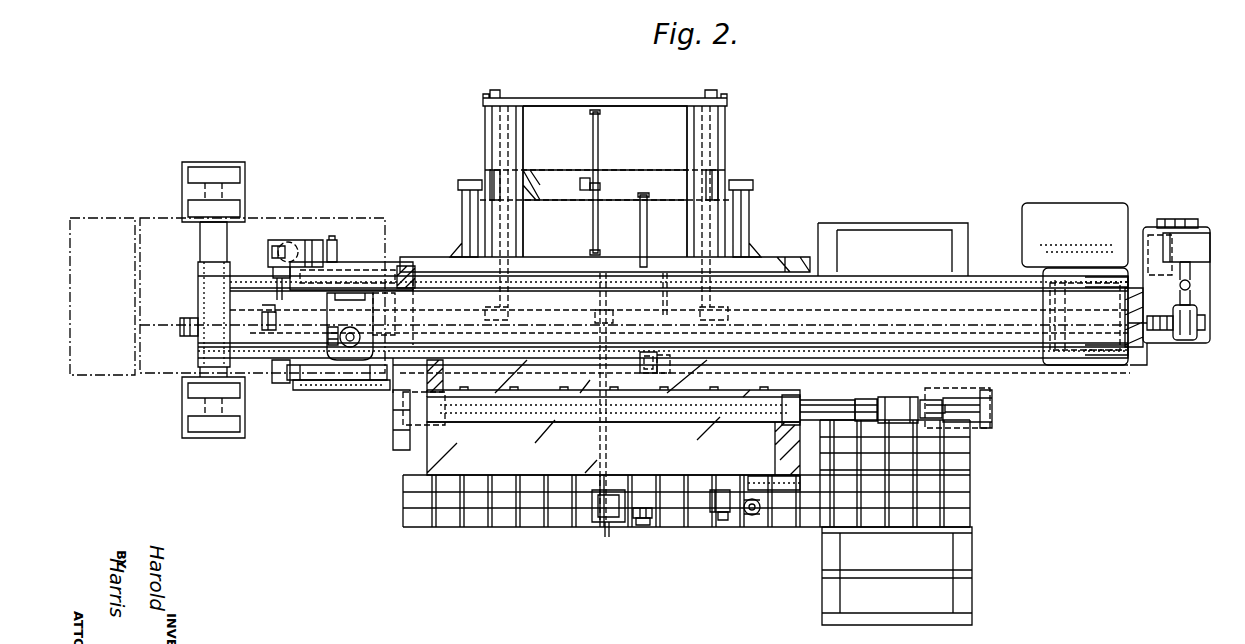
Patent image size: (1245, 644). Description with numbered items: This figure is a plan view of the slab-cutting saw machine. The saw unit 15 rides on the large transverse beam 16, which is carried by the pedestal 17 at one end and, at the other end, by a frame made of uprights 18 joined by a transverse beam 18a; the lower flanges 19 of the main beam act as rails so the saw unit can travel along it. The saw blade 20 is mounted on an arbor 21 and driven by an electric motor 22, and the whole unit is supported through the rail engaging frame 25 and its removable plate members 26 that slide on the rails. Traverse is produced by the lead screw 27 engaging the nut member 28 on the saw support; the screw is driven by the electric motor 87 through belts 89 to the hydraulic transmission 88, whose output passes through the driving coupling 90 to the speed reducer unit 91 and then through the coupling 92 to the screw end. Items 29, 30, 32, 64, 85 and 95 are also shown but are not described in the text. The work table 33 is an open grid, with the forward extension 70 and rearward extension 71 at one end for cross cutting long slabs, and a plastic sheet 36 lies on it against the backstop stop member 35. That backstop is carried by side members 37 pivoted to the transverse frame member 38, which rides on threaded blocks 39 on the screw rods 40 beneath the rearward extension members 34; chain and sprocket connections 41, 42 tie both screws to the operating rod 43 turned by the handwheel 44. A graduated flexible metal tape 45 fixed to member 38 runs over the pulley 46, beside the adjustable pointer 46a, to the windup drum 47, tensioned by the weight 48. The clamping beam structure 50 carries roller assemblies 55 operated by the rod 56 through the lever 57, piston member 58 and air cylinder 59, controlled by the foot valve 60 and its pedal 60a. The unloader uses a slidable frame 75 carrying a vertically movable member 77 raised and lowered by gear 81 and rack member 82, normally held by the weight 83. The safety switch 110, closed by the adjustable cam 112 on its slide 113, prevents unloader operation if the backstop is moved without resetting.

The saw unit 15 is at (337, 239).
The transverse beam 16 is at (980, 275).
The pedestal 17 is at (1134, 366).
The uprights 18 is at (228, 193).
The transverse beam 18a is at (206, 243).
The lower flanges 19 is at (1002, 273).
The saw blade 20 is at (378, 382).
The arbor 21 is at (345, 390).
The electric motor 22 is at (380, 310).
The rail engaging frame 25 is at (415, 300).
The removable plate members 26 is at (395, 275).
The lead screw 27 is at (1013, 332).
The nut member 28 is at (327, 306).
The plate 29 is at (350, 258).
The roller 30 is at (349, 327).
The shaft 32 is at (689, 339).
The work table 33 is at (405, 499).
The rearward extension members 34 is at (490, 128).
The backstop stop member 35 is at (778, 256).
The plastic sheet 36 is at (403, 446).
The side members 37 is at (462, 205).
The transverse frame member 38 is at (630, 178).
The threaded blocks 39 is at (492, 164).
The screw rods 40 is at (497, 140).
The chain and sprocket connection 41 is at (553, 305).
The chain and sprocket connection 42 is at (665, 273).
The operating rod 43 is at (605, 445).
The handwheel 44 is at (596, 520).
The graduated flexible metal tape 45 is at (641, 237).
The pulley 46 is at (643, 521).
The adjustable pointer 46a is at (640, 520).
The windup drum 47 is at (670, 366).
The weight 48 is at (641, 353).
The beam structure 50 is at (493, 417).
The roller assembly 55 is at (565, 396).
The rod 56 is at (850, 402).
The lever 57 is at (992, 410).
The piston member 58 is at (934, 400).
The air cylinder 59 is at (898, 401).
The foot valve 60 is at (713, 500).
The pedal 60a is at (725, 520).
The roller 64 is at (757, 517).
The forward extension 70 is at (968, 558).
The rearward extension 71 is at (888, 224).
The slidable frame 75 is at (273, 311).
The vertically movable member 77 is at (262, 319).
The gear 81 is at (270, 254).
The rack member 82 is at (294, 248).
The weight 83 is at (277, 243).
The frame 85 is at (96, 378).
The electric motor 87 is at (1156, 230).
The hydraulic transmission 88 is at (1210, 255).
The belts 89 is at (1190, 219).
The driving coupling 90 is at (1192, 285).
The speed reducer unit 91 is at (1198, 330).
The coupling 92 is at (1158, 335).
The block 95 is at (765, 474).
The safety switch 110 is at (583, 178).
The adjustable cam 112 is at (600, 183).
The slide 113 is at (594, 143).